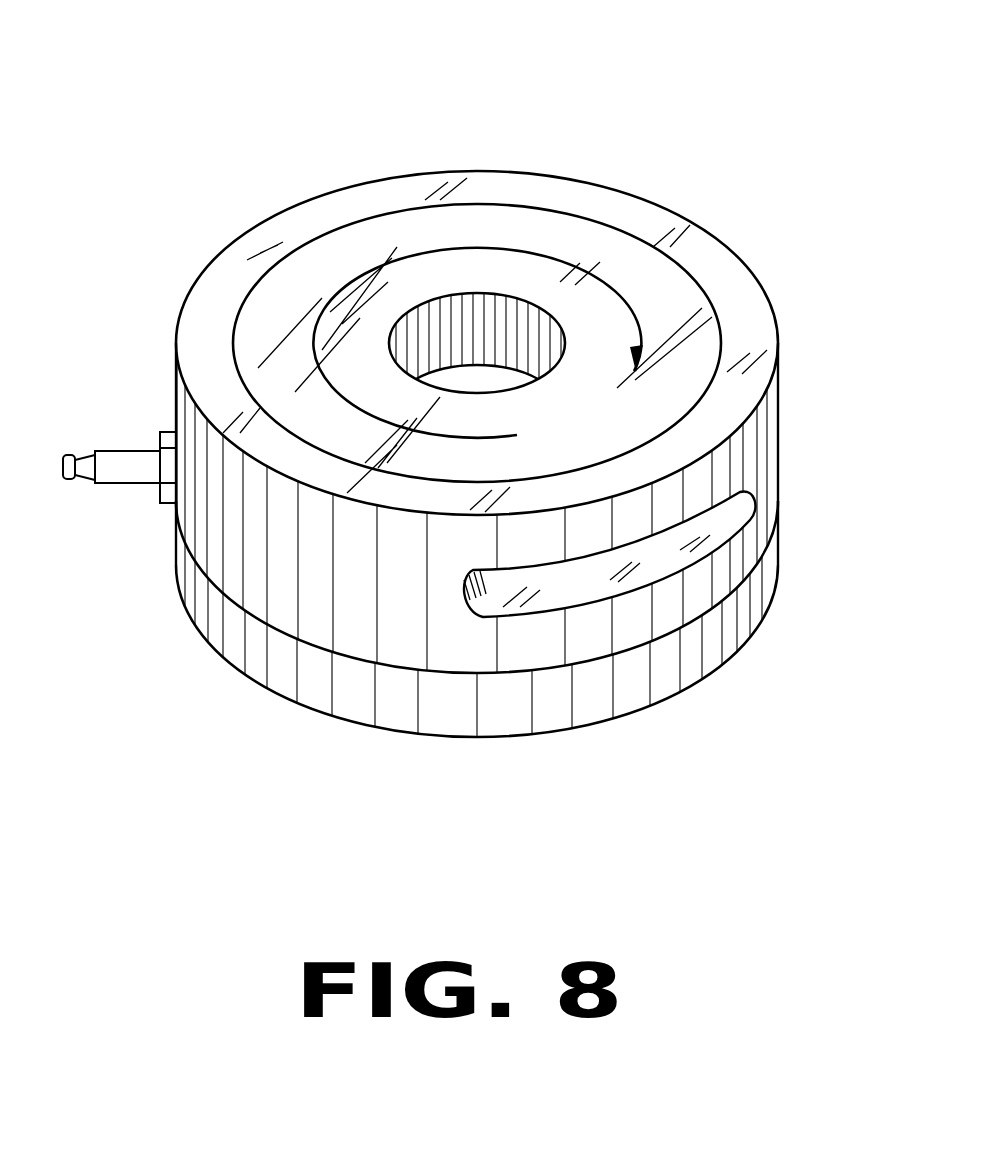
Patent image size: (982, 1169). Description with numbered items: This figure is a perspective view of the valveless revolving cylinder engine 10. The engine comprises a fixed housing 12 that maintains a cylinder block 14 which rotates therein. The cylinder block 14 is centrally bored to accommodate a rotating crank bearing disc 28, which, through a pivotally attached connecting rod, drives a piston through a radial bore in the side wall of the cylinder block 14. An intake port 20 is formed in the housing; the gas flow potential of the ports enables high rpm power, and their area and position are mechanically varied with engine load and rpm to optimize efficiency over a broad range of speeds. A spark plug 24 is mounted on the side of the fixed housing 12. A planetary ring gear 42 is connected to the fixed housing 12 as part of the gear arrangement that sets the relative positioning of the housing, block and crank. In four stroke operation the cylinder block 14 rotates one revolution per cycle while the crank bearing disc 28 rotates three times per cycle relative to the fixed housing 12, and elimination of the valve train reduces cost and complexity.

The valveless revolving cylinder engine 10 is at (232, 152).
The fixed housing 12 is at (757, 325).
The cylinder block 14 is at (265, 310).
The intake port 20 is at (667, 587).
The spark plug 24 is at (122, 450).
The crank bearing disc 28 is at (453, 378).
The planetary ring gear 42 is at (235, 633).